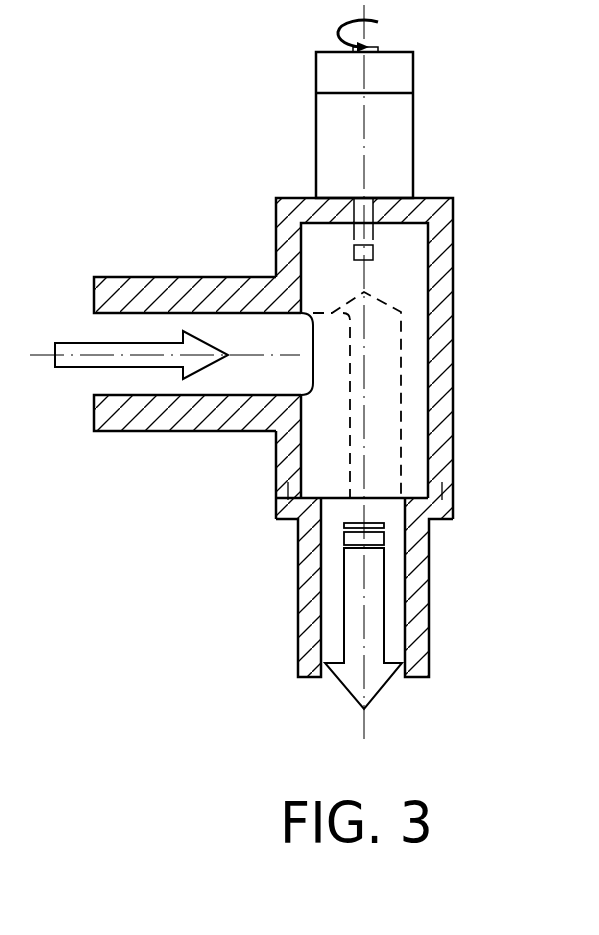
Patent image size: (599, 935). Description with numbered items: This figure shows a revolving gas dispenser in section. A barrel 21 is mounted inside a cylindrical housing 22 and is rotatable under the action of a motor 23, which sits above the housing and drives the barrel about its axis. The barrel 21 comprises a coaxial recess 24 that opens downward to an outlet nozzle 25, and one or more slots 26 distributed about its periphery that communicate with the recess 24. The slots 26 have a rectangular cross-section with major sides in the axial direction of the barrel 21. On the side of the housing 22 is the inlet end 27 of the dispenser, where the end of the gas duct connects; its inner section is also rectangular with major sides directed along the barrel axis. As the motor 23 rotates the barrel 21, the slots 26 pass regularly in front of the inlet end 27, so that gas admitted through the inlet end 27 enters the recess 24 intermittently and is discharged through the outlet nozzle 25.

The barrel 21 is at (400, 257).
The cylindrical housing 22 is at (443, 358).
The motor 23 is at (395, 152).
The coaxial recess 24 is at (385, 443).
The outlet nozzle 25 is at (418, 594).
The slot 26 is at (307, 362).
The inlet end 27 is at (193, 298).